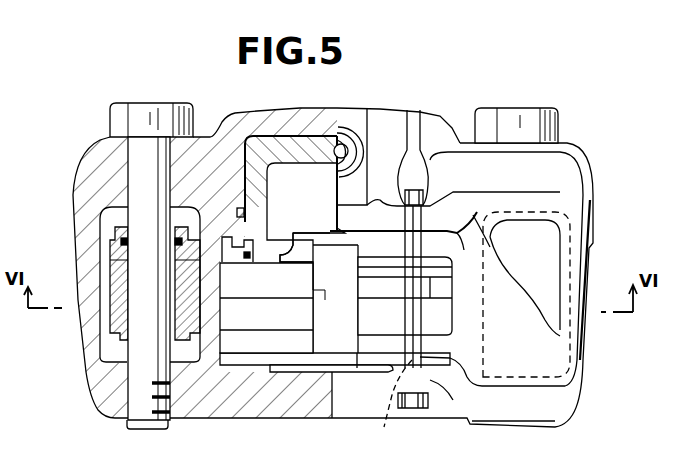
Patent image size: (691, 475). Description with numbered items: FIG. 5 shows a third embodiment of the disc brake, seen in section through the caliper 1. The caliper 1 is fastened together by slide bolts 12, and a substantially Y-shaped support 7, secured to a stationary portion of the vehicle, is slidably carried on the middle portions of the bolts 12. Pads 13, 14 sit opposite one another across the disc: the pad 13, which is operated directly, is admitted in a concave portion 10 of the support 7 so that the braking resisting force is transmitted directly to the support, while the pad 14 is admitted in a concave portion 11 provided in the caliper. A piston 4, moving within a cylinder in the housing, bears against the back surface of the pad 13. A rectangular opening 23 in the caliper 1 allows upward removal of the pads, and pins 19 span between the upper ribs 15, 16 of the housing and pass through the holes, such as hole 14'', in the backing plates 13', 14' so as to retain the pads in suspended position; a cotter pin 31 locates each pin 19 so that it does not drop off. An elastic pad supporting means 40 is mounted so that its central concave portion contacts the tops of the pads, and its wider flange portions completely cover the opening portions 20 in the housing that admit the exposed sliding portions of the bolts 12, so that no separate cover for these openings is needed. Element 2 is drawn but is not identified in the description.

The caliper 1 is at (313, 420).
The pivot pin 2 is at (348, 148).
The piston 4 is at (270, 186).
The support 7 is at (112, 308).
The concave portion 10 is at (192, 420).
The concave portion 11 is at (217, 420).
The bolt 12 is at (152, 103).
The pad 13 is at (266, 308).
The pad backing plate 13' is at (296, 298).
The pad 14 is at (288, 404).
The pad backing plate 14' is at (331, 408).
The hole 14'' is at (392, 407).
The rib 15 is at (432, 215).
The rib 16 is at (427, 377).
The pin 19 is at (413, 410).
The opening portion 20 is at (100, 242).
The rectangular opening 23 is at (433, 317).
The cotter pin 31 is at (411, 108).
The pad supporting means 40 is at (350, 307).